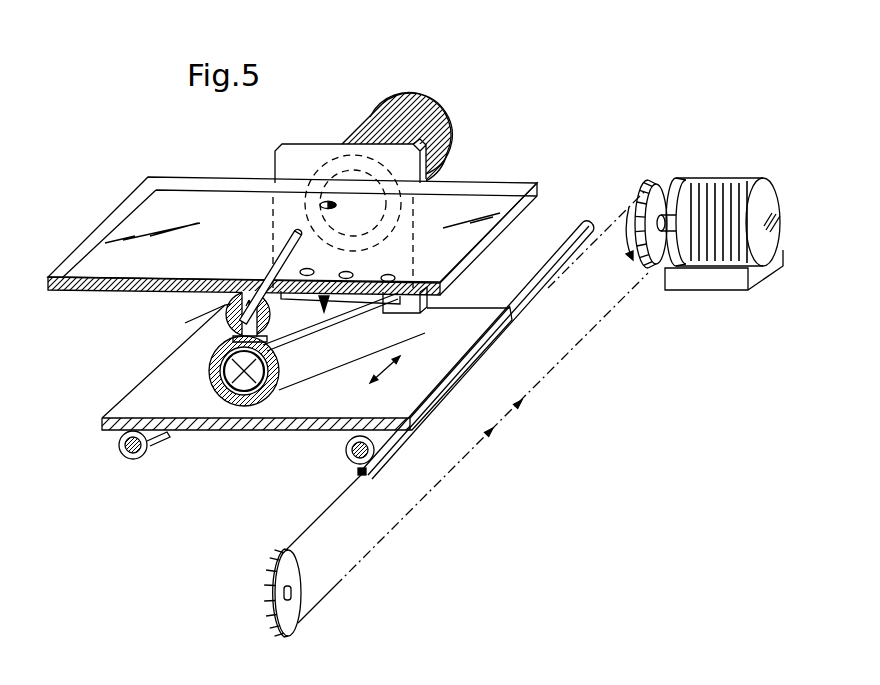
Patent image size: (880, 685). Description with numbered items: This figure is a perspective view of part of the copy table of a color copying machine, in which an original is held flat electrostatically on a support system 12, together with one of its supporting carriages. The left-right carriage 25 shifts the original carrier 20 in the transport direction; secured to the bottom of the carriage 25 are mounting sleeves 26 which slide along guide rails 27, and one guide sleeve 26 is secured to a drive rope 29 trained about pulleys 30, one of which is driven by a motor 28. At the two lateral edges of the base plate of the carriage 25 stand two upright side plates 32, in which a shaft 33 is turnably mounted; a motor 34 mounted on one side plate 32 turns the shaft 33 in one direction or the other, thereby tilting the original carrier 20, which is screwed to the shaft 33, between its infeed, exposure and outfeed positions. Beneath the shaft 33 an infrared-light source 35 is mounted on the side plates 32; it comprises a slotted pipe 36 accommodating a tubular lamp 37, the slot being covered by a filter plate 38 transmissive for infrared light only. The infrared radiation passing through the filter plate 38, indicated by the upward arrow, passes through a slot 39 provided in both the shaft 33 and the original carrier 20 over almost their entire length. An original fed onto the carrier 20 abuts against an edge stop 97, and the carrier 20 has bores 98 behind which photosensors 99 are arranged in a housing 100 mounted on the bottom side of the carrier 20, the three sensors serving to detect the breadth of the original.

The support system 12 is at (341, 101).
The original carrier 20 is at (500, 201).
The left-right carriage 25 is at (265, 418).
The mounting sleeves 26 is at (133, 459).
The guide rails 27 is at (575, 222).
The motor 28 is at (722, 187).
The drive rope 29 is at (546, 371).
The pulleys 30 is at (292, 620).
The upright side plates 32 is at (299, 152).
The shaft 33 is at (185, 323).
The motor 34 is at (440, 116).
The infrared-light source 35 is at (310, 371).
The slotted pipe 36 is at (210, 384).
The tubular lamp 37 is at (262, 380).
The filter plate 38 is at (228, 336).
The slot 39 is at (287, 258).
The edge stop 97 is at (118, 232).
The bores 98 is at (392, 275).
The photosensors 99 is at (392, 311).
The housing 100 is at (340, 313).